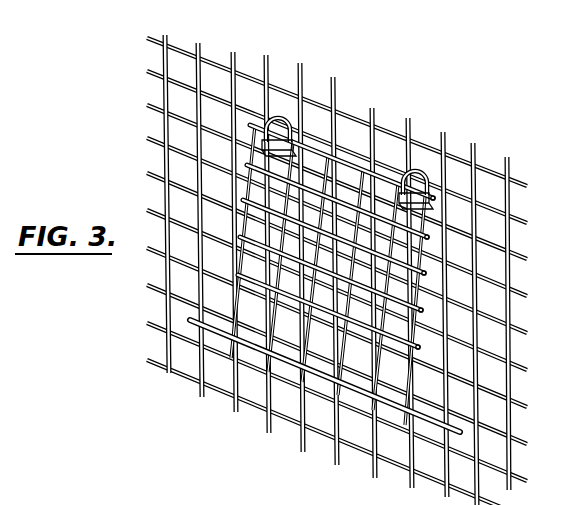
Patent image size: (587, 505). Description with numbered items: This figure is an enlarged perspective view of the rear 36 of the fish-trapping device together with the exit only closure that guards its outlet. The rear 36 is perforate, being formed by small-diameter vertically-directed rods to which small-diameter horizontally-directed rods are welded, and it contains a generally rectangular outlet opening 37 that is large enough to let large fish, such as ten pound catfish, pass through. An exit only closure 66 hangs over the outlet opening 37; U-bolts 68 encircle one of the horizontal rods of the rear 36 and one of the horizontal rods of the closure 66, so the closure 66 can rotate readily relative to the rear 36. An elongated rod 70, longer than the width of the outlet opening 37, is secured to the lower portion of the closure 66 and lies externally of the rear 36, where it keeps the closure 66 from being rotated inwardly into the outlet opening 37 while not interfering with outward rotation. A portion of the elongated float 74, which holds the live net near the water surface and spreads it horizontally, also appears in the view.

The rear 36 is at (512, 172).
The outlet opening 37 is at (390, 289).
The exit only closure 66 is at (273, 342).
The U-bolts 68 is at (285, 118).
The elongated rod 70 is at (190, 321).
The elongated float 74 is at (34, 493).